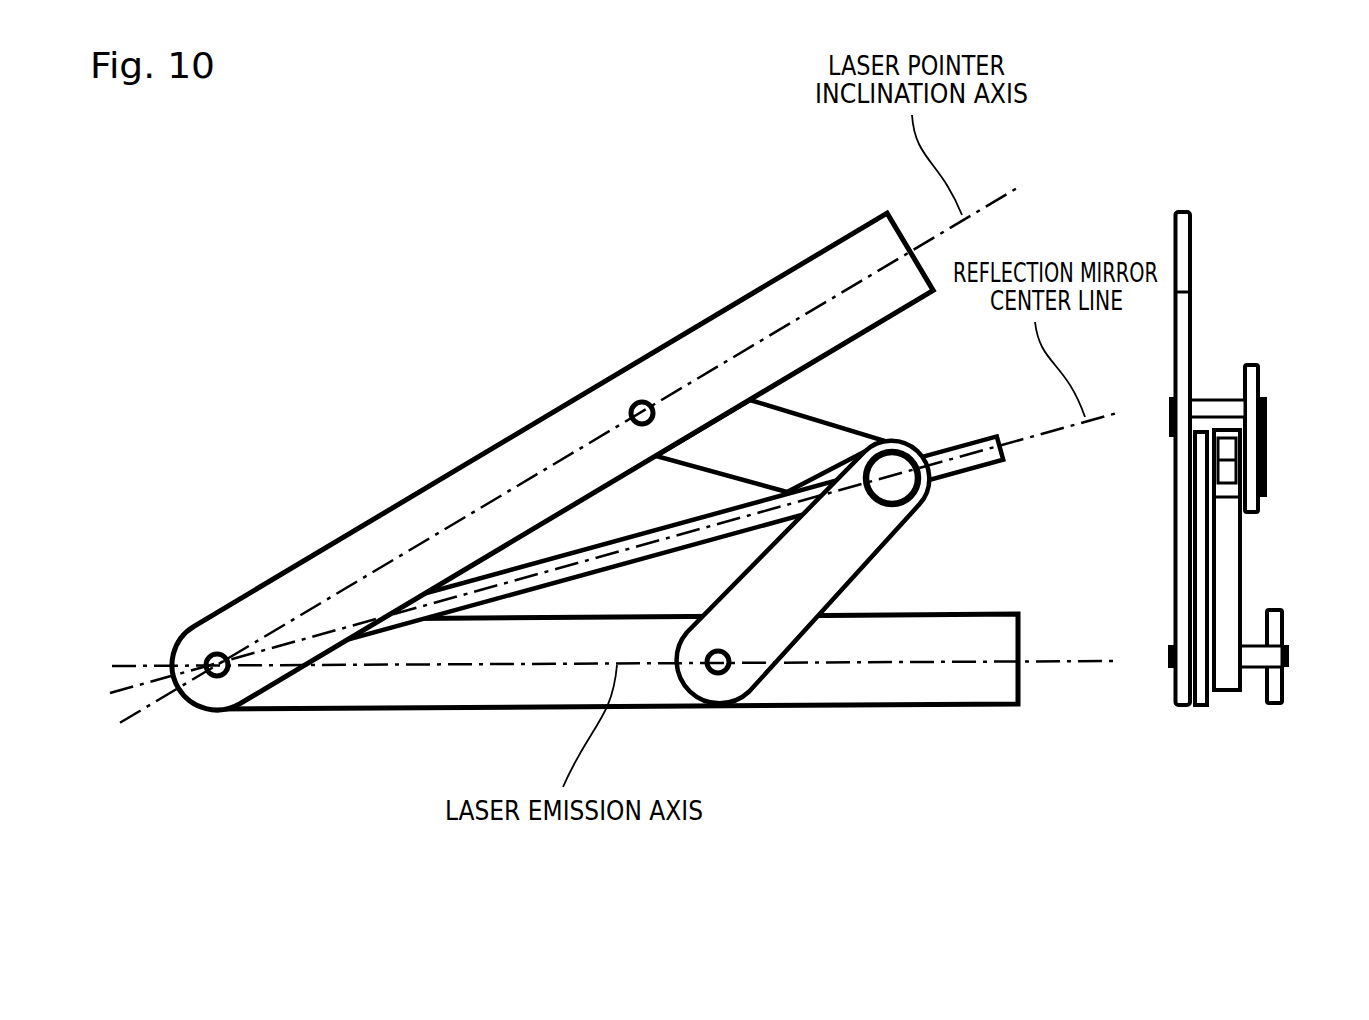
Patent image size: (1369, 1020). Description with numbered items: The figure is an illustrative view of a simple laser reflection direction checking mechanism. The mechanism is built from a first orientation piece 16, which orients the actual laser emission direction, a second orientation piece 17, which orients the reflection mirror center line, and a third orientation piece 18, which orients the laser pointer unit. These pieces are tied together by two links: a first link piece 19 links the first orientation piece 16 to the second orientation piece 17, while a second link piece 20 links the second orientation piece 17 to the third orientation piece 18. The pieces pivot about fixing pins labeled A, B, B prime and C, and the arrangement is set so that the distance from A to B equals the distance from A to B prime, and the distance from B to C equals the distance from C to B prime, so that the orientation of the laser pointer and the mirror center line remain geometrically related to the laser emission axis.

The first orientation piece 16 is at (898, 690).
The second orientation piece 17 is at (995, 462).
The third orientation piece 18 is at (487, 470).
The first link piece 19 is at (875, 515).
The second link piece 20 is at (805, 437).